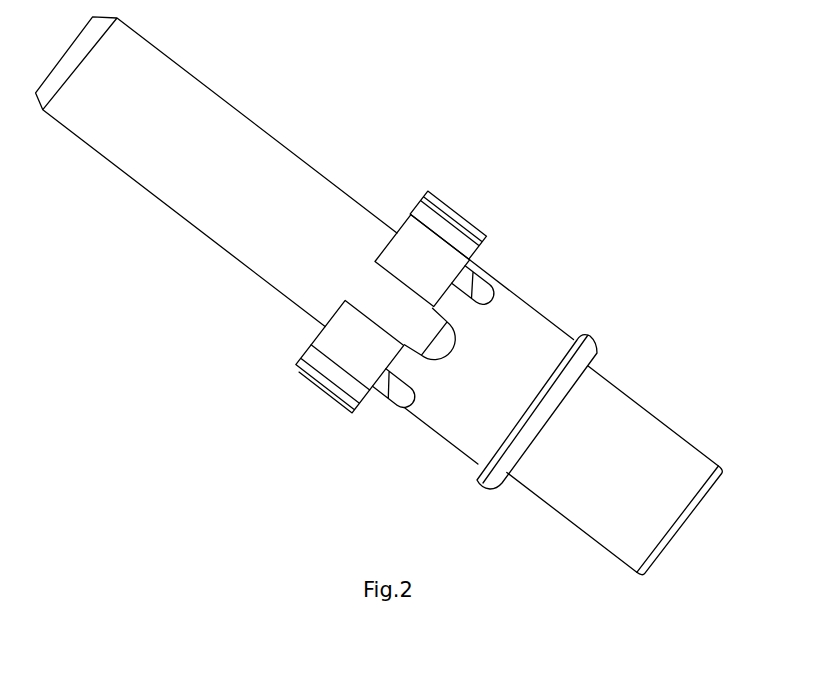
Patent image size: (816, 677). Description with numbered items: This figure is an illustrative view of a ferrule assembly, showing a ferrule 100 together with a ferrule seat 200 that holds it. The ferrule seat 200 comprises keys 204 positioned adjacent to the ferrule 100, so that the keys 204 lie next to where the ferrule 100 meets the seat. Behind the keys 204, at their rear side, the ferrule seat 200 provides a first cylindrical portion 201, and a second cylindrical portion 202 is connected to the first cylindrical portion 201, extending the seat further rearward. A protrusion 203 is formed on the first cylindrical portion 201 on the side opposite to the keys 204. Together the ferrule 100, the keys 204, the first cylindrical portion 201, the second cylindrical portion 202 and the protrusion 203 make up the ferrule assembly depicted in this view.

The ferrule 100 is at (265, 167).
The ferrule seat 200 is at (420, 468).
The first cylindrical portion 201 is at (520, 318).
The second cylindrical portion 202 is at (640, 420).
The protrusion 203 is at (587, 334).
The keys 204 is at (455, 207).